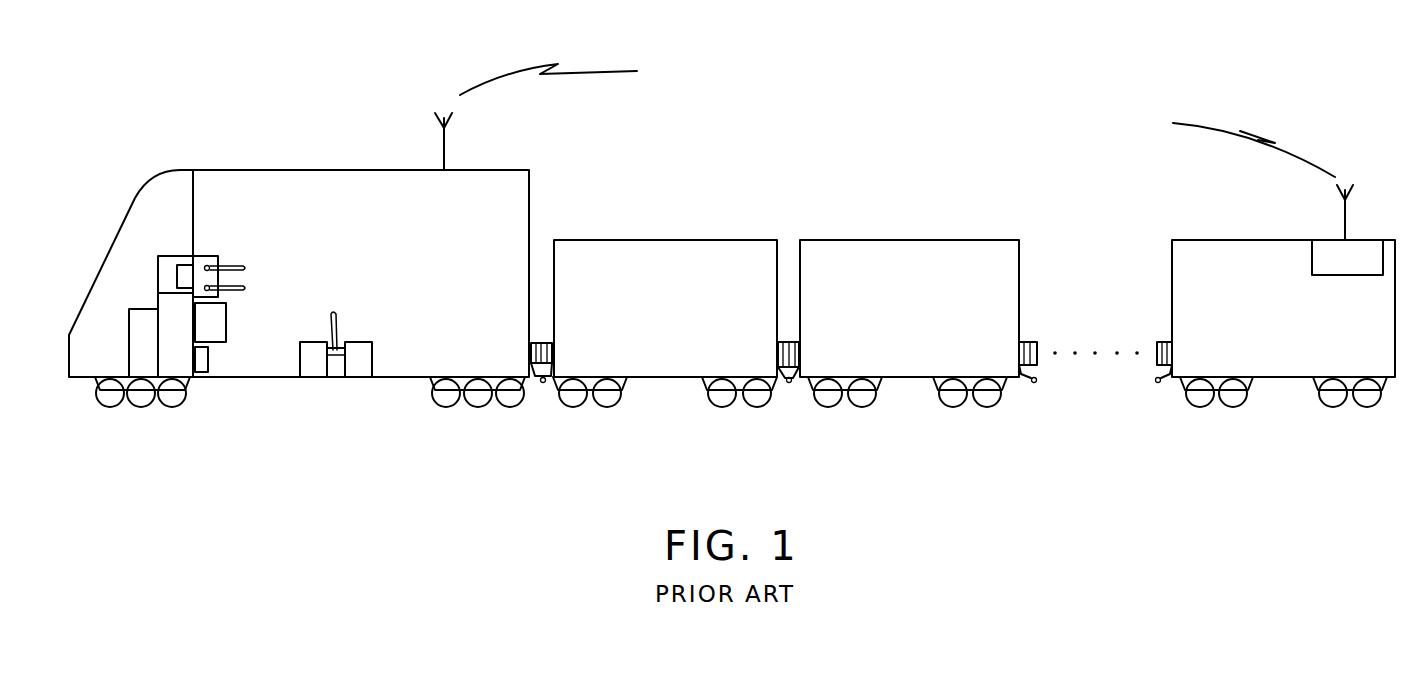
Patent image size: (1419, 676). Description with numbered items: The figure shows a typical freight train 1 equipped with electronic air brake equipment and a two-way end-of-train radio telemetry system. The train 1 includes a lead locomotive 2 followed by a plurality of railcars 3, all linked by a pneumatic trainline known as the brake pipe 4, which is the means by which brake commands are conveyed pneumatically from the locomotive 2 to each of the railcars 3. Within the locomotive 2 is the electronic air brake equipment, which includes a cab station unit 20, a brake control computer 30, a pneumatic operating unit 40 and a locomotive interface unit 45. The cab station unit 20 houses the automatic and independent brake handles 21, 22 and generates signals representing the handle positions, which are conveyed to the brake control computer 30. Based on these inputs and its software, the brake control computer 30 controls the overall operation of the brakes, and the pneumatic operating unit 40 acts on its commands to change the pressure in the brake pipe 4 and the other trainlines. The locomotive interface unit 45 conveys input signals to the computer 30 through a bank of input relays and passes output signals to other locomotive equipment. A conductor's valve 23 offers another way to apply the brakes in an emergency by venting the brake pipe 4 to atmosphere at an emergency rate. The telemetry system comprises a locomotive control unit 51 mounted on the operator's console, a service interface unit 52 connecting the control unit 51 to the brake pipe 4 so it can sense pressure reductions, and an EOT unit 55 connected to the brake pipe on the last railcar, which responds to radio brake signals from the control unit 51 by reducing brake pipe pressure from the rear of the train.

The freight train 1 is at (272, 113).
The locomotive 2 is at (490, 170).
The railcar 3 is at (730, 240).
The brake pipe 4 is at (543, 384).
The cab station unit 20 is at (205, 257).
The automatic brake handle 21 is at (246, 268).
The independent brake handle 22 is at (246, 288).
The conductor's valve 23 is at (338, 313).
The brake control computer 30 is at (188, 265).
The pneumatic operating unit 40 is at (158, 278).
The locomotive interface unit 45 is at (129, 328).
The locomotive control unit 51 is at (226, 320).
The service interface unit 52 is at (208, 357).
The EOT unit 55 is at (1360, 240).